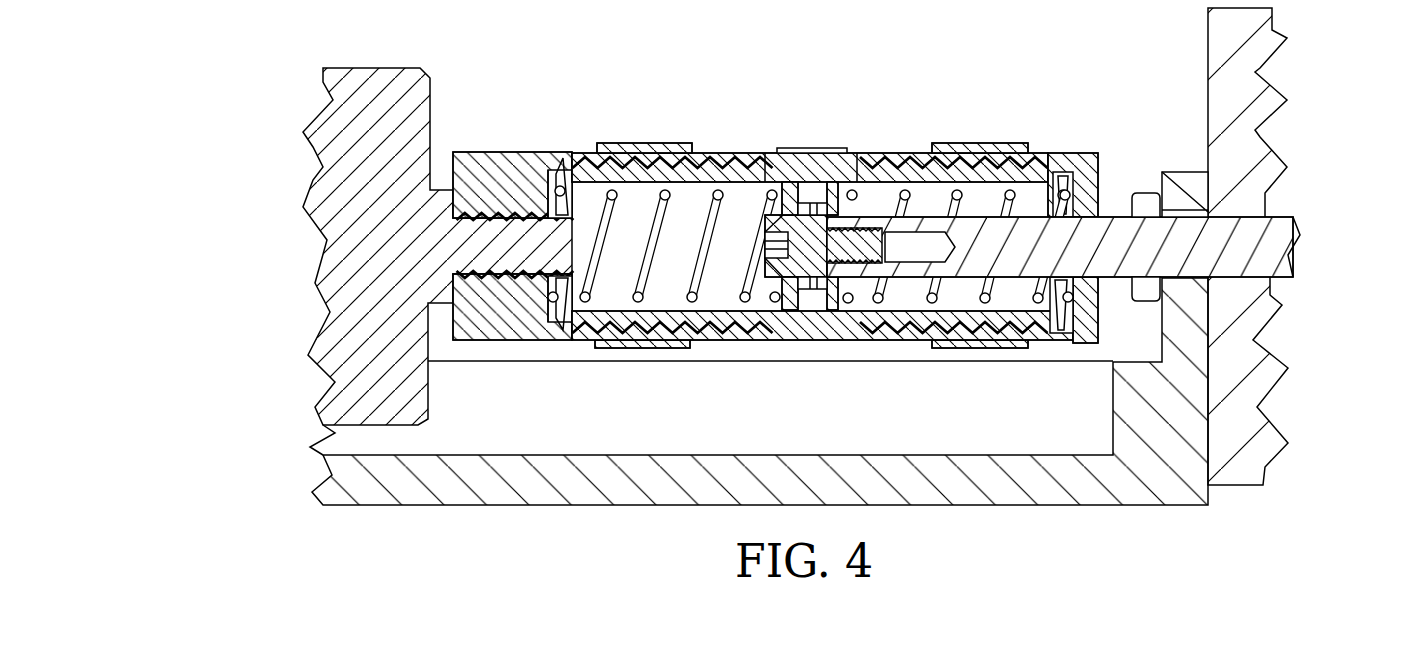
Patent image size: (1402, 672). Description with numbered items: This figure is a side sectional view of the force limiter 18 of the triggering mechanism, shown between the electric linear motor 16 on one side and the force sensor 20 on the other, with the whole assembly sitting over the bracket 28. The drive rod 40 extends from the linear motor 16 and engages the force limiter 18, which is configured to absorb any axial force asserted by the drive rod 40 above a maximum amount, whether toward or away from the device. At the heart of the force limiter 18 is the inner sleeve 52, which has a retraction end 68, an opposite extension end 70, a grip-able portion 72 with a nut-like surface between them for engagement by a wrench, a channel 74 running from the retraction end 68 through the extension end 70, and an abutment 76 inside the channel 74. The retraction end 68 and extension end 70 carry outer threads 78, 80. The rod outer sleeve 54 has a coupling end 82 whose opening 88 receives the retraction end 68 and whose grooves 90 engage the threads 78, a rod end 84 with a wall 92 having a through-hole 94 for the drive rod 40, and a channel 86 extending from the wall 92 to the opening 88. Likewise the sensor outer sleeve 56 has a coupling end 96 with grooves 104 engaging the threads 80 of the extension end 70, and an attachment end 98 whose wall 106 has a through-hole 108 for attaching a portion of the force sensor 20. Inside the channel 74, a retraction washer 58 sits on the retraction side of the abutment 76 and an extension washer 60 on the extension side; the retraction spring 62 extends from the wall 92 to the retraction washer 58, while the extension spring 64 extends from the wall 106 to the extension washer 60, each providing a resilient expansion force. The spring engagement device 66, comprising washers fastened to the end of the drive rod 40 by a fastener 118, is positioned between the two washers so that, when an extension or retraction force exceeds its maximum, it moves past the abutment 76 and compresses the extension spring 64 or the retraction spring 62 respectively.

The electric linear motor 16 is at (1205, 52).
The force limiter 18 is at (886, 88).
The force sensor 20 is at (423, 68).
The bracket 28 is at (1048, 508).
The drive rod 40 is at (1262, 242).
The inner sleeve 52 is at (793, 135).
The rod outer sleeve 54 is at (972, 135).
The sensor outer sleeve 56 is at (658, 138).
The retraction washer 58 is at (857, 153).
The extension washer 60 is at (782, 192).
The retraction spring 62 is at (1040, 290).
The extension spring 64 is at (586, 292).
The spring engagement device 66 is at (831, 300).
The retraction end 68 is at (1067, 305).
The extension end 70 is at (562, 308).
The grip-able portion 72 is at (805, 148).
The channel 74 is at (665, 292).
The abutment 76 is at (813, 292).
The threads 78 is at (1020, 325).
The threads 80 is at (690, 320).
The coupling end 82 is at (934, 142).
The rod end 84 is at (1070, 150).
The channel 86 is at (950, 188).
The opening 88 is at (932, 345).
The grooves 90 is at (1017, 153).
The wall 92 is at (1094, 150).
The through-hole 94 is at (1103, 216).
The coupling end 96 is at (675, 142).
The attachment end 98 is at (460, 152).
The grooves 104 is at (655, 158).
The wall 106 is at (552, 190).
The through-hole 108 is at (492, 278).
The fastener 118 is at (772, 225).